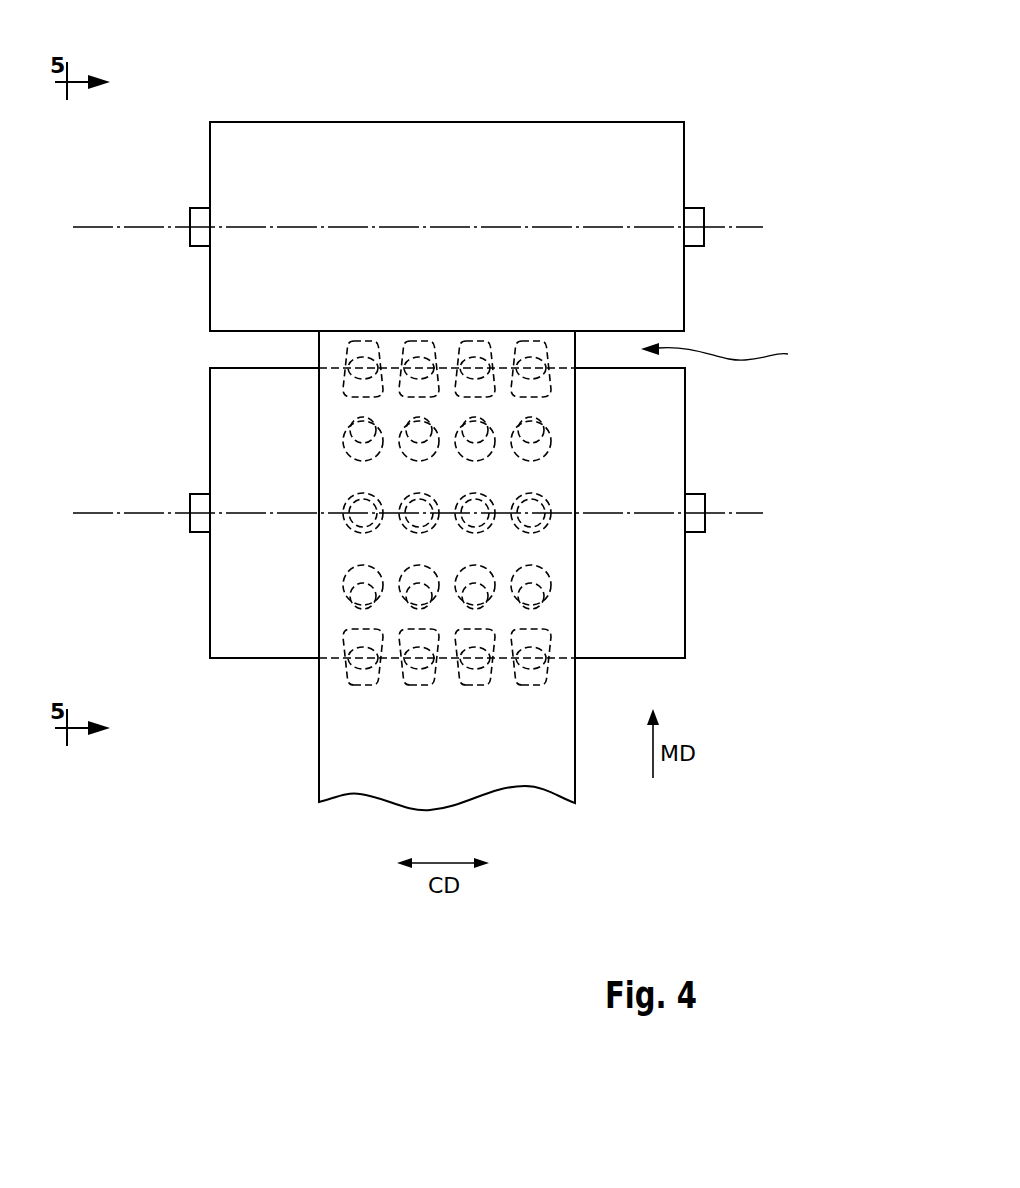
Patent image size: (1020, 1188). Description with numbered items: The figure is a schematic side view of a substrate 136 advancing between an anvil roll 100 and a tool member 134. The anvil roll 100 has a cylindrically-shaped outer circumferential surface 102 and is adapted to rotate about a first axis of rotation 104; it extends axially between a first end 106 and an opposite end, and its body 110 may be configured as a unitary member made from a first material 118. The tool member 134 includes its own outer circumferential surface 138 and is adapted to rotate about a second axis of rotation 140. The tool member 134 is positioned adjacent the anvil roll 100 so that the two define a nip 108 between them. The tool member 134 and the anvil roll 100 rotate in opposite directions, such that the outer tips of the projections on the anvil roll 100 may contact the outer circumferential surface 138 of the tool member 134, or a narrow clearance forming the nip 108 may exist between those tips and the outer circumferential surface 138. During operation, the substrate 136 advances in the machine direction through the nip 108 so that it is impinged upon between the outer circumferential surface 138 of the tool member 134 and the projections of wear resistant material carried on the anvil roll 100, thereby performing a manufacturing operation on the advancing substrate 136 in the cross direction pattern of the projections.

The anvil roll 100 is at (435, 513).
The outer circumferential surface 102 is at (660, 628).
The first axis of rotation 104 is at (97, 513).
The first end 106 is at (685, 564).
The nip 108 is at (734, 356).
The body 110 is at (243, 457).
The first material 118 is at (242, 400).
The tool member 134 is at (641, 172).
The substrate 136 is at (338, 757).
The outer circumferential surface 138 is at (660, 200).
The second axis of rotation 140 is at (97, 227).